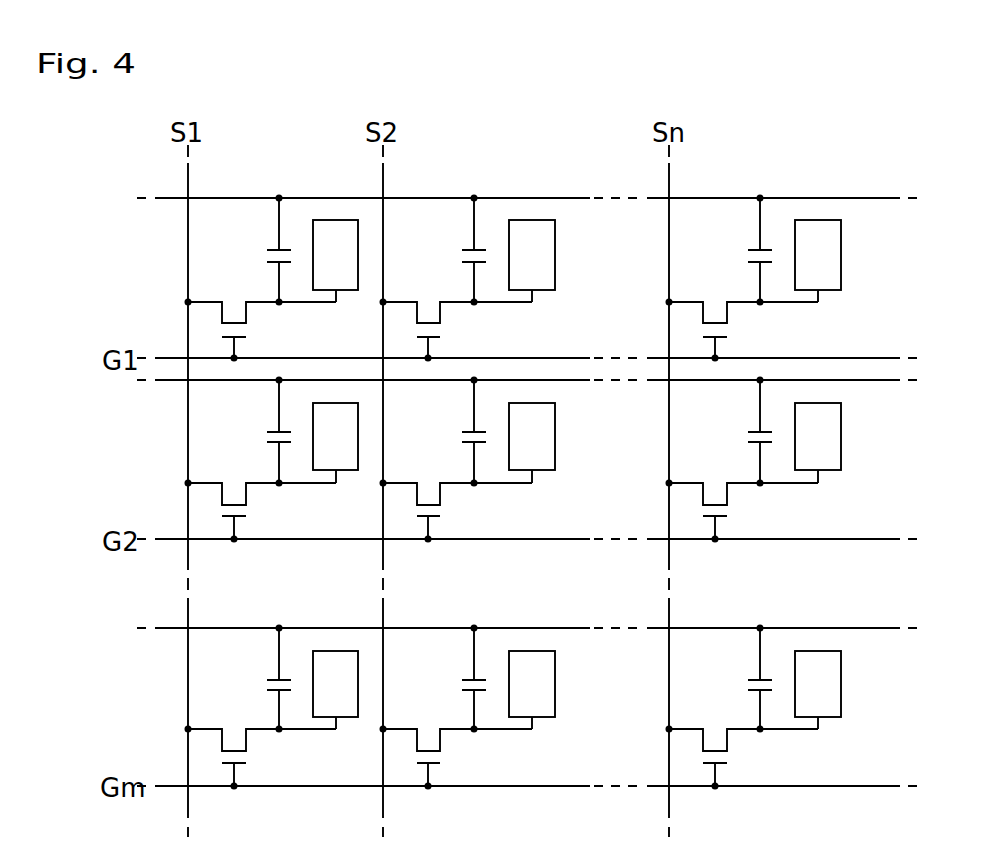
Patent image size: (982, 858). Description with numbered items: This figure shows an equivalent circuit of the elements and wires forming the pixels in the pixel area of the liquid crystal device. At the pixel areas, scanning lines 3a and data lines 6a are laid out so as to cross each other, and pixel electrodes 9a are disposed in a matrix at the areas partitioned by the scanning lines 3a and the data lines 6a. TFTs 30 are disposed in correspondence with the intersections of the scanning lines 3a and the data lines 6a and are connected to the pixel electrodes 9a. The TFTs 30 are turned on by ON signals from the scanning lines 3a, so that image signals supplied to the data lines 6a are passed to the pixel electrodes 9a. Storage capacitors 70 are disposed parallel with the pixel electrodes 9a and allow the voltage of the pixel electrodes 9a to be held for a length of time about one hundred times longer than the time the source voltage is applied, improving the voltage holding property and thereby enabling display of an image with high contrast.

The data line 6a is at (189, 180).
The scanning line 3a is at (877, 357).
The storage capacitor 70 is at (257, 251).
The TFT 30 is at (259, 329).
The pixel electrode 9a is at (348, 291).